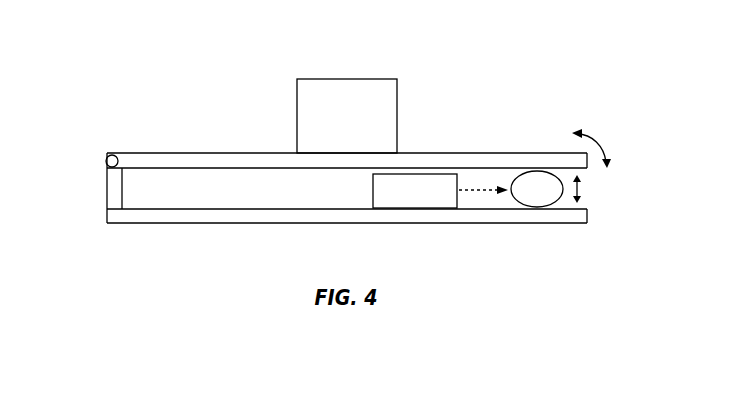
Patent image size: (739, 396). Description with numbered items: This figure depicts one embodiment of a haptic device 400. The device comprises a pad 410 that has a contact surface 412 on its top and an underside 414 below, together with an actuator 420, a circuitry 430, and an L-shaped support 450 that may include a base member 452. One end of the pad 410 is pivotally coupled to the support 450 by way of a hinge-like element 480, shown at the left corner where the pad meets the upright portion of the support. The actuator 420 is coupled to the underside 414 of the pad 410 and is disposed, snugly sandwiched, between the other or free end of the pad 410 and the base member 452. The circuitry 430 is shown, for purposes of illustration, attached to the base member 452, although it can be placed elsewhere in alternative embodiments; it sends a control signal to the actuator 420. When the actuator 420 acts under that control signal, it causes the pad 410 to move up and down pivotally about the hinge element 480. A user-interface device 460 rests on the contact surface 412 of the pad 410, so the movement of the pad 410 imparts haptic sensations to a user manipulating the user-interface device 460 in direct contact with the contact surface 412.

The haptic device 400 is at (129, 75).
The pad 410 is at (506, 147).
The contact surface 412 is at (228, 153).
The underside 414 is at (228, 168).
The actuator 420 is at (537, 204).
The circuitry 430 is at (373, 198).
The L-shaped support 450 is at (96, 225).
The base member 452 is at (247, 224).
The user-interface device 460 is at (348, 78).
The hinge element 480 is at (109, 155).